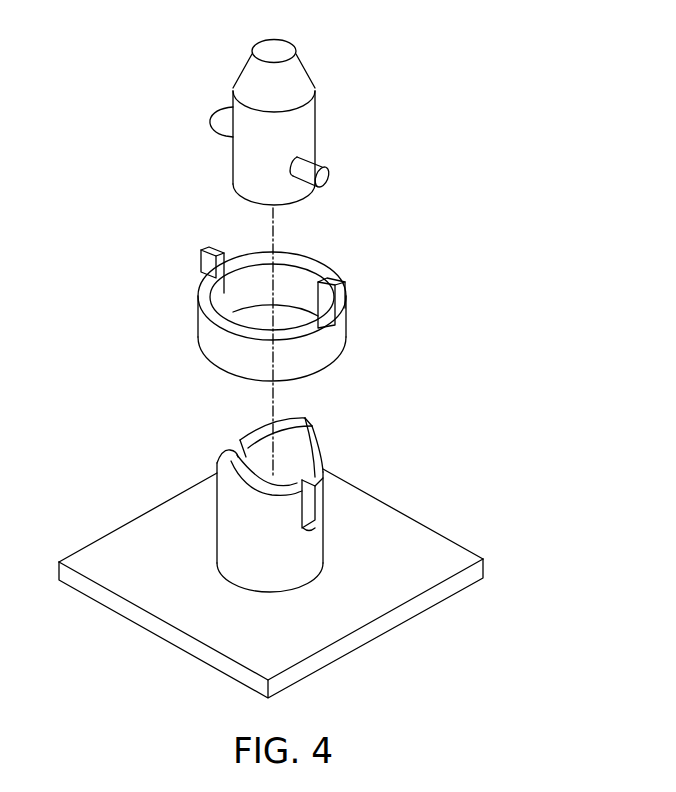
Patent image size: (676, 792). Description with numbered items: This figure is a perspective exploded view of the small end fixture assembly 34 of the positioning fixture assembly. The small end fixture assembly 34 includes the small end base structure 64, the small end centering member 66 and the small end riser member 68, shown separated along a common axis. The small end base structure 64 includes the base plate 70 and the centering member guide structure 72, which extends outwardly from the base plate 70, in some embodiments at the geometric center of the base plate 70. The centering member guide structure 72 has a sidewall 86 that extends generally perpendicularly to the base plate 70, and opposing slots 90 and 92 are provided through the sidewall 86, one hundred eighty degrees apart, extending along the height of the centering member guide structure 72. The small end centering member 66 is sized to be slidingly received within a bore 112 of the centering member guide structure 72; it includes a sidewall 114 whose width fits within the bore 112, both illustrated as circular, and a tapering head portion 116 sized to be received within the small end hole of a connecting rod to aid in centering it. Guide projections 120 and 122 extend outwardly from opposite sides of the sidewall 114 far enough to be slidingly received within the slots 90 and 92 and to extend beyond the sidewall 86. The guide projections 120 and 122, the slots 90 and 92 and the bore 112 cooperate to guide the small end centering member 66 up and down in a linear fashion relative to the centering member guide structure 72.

The small end fixture assembly 34 is at (275, 355).
The small end base structure 64 is at (248, 543).
The small end centering member 66 is at (256, 113).
The small end riser member 68 is at (212, 314).
The base plate 70 is at (338, 652).
The centering member guide structure 72 is at (286, 490).
The sidewall 86 is at (222, 525).
The slot 90 is at (242, 455).
The slot 92 is at (303, 525).
The bore 112 is at (346, 432).
The sidewall 114 is at (317, 128).
The tapering head portion 116 is at (283, 52).
The guide projection 120 is at (213, 112).
The guide projection 122 is at (332, 172).